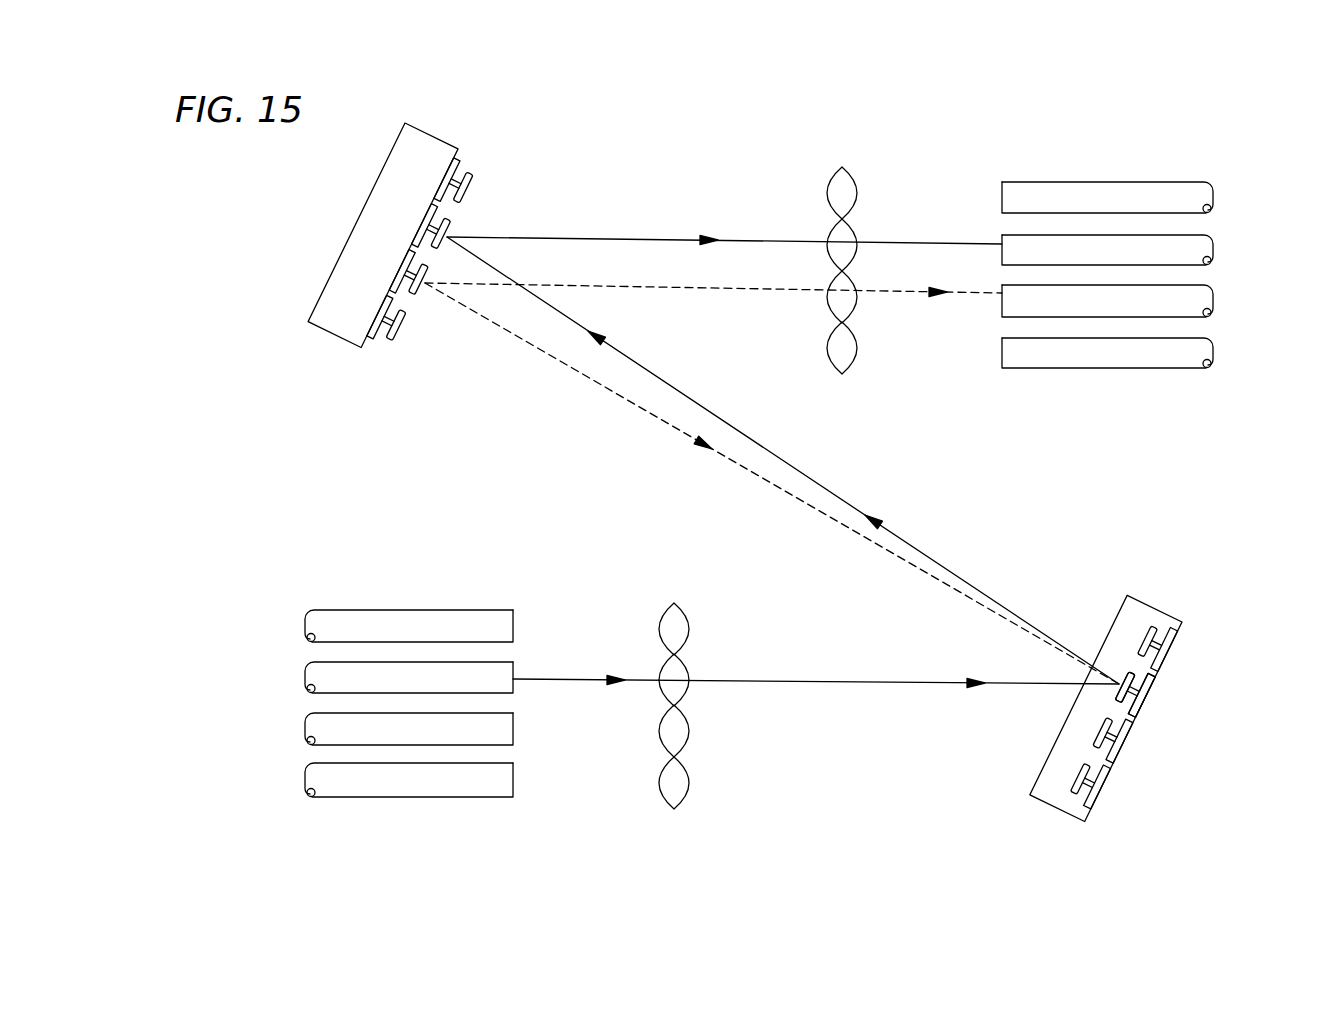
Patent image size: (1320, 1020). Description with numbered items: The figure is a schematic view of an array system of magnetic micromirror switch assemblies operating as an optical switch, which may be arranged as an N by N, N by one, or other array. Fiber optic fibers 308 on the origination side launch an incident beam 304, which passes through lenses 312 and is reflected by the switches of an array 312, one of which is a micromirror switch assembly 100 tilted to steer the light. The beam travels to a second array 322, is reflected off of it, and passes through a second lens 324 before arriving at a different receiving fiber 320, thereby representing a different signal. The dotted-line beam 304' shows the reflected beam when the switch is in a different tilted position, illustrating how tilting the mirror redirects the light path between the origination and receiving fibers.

The optical module 100 is at (1128, 677).
The incident beam 304 is at (783, 501).
The reflected beam 304' is at (772, 483).
The fiber optic fibers 308 is at (340, 676).
The lenses / array of switches 312 is at (672, 673).
The receiving fiber 320 is at (1170, 247).
The second array 322 is at (357, 222).
The second lens 324 is at (842, 237).